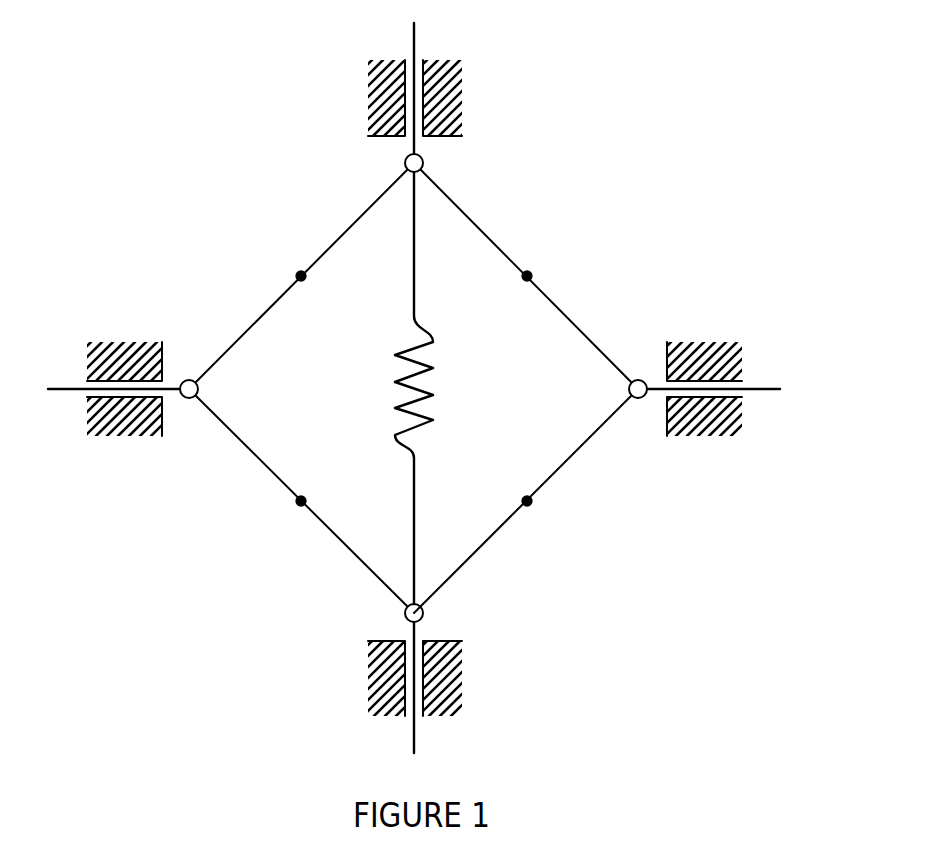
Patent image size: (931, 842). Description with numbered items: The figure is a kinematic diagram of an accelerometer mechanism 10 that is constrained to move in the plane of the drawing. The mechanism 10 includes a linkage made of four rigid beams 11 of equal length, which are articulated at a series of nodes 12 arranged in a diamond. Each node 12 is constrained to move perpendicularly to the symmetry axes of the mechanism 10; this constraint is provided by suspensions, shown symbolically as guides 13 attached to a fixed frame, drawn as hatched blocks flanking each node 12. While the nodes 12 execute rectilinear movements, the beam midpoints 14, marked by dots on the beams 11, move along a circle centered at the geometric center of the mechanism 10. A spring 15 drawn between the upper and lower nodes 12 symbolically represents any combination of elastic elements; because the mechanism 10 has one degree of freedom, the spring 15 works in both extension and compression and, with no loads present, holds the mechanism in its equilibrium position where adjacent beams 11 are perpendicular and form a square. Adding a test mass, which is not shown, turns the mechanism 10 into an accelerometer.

The accelerometer mechanism 10 is at (192, 156).
The rigid beam 11 is at (265, 312).
The node 12 is at (423, 163).
The guide 13 is at (696, 340).
The beam midpoint 14 is at (528, 503).
The spring 15 is at (395, 403).